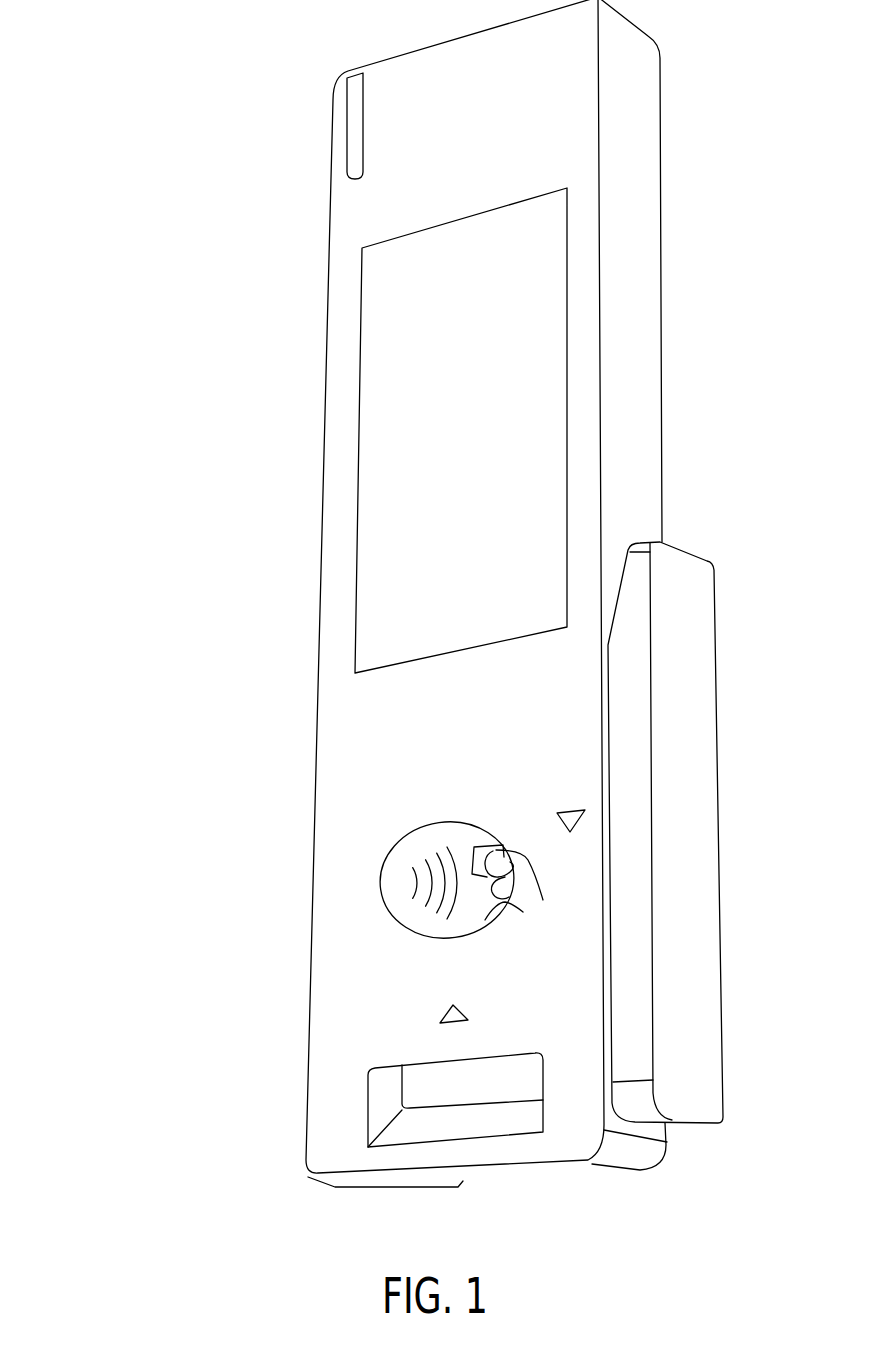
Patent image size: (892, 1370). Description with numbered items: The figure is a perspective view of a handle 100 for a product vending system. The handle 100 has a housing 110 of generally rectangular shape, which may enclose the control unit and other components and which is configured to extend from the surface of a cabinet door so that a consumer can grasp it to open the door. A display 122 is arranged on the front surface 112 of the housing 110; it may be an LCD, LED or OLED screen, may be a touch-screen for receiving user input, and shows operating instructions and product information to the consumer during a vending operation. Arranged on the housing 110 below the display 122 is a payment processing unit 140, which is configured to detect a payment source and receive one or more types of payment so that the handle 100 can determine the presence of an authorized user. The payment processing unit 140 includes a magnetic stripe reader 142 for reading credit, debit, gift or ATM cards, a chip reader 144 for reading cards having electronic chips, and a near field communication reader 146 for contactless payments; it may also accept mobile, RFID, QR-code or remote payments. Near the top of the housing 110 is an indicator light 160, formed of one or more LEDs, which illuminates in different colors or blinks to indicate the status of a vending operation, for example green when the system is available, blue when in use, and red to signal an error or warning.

The handle 100 is at (155, 128).
The housing 110 is at (332, 681).
The front surface 112 is at (463, 737).
The display 122 is at (538, 413).
The payment processing unit 140 is at (355, 976).
The magnetic stripe reader 142 is at (703, 850).
The chip reader 144 is at (477, 1105).
The near field communication (NFC) reader 146 is at (477, 923).
The indicator light 160 is at (347, 130).